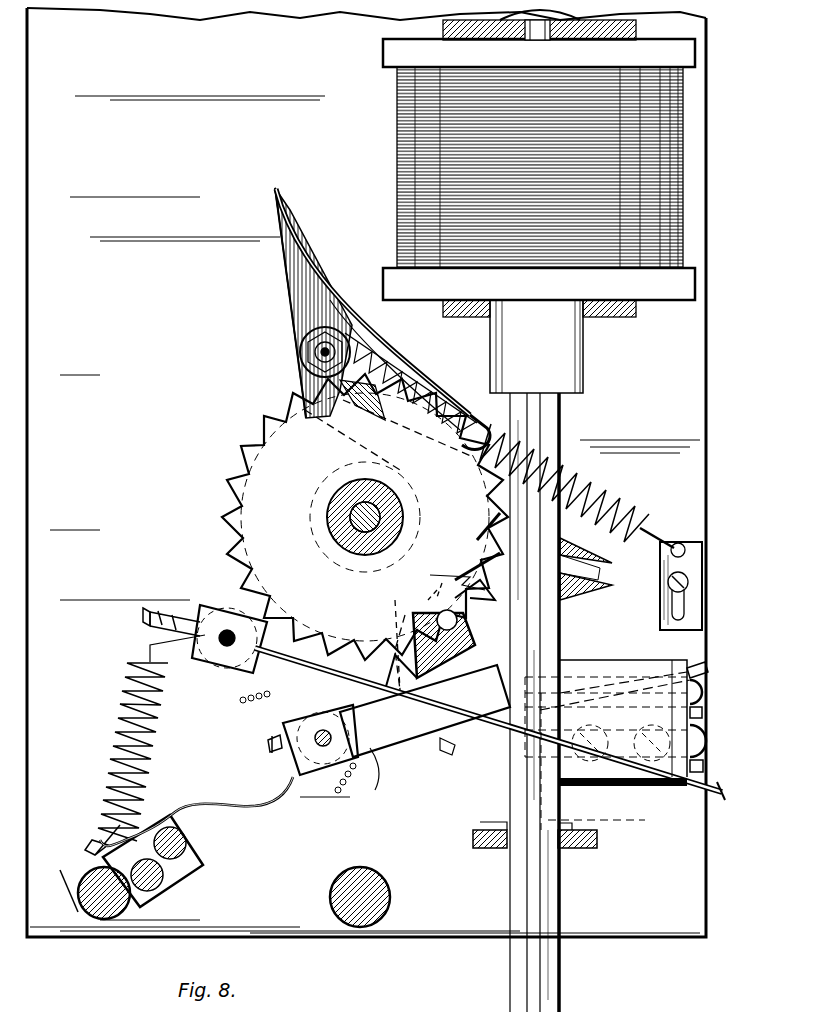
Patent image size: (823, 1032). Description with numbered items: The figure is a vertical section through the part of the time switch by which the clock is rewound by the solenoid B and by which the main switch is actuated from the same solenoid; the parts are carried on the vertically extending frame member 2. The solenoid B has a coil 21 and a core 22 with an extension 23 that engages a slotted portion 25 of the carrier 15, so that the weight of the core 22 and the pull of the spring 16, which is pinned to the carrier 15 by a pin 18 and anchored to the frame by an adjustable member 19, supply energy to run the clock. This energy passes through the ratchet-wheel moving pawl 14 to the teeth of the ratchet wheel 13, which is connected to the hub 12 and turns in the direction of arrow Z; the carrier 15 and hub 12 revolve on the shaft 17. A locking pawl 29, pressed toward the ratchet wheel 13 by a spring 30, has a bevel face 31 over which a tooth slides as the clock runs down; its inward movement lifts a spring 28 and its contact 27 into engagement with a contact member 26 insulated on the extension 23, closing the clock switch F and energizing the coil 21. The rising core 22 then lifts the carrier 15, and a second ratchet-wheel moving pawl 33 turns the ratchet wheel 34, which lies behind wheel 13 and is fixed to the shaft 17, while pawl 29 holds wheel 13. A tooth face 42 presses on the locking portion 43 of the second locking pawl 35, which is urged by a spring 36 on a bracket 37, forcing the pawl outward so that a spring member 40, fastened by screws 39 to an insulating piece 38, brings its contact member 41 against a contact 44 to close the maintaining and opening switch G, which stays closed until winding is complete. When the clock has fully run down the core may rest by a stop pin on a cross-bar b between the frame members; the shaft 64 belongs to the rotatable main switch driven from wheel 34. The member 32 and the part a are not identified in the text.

The frame member 2 is at (725, 882).
The solenoid B is at (548, 163).
The coil 21 is at (690, 190).
The core 22 is at (565, 400).
The extension 23 is at (560, 605).
The carrier 15 is at (295, 302).
The ratchet-wheel moving pawl 14 is at (440, 400).
The second ratchet-wheel moving pawl 33 is at (468, 546).
The pin 18 is at (320, 352).
The hub 12 is at (334, 517).
The ratchet wheel 13 is at (248, 548).
The ratchet wheel 34 is at (250, 458).
The shaft 17 is at (387, 500).
The face 42 is at (470, 576).
The locking portion 43 is at (480, 594).
The second locking pawl 35 is at (462, 636).
The bevel face 31 is at (435, 660).
The link 32 is at (378, 615).
The spring 16 is at (585, 483).
The slotted portion 25 is at (612, 576).
The adjustable member 19 is at (705, 590).
The locking pawl 29 is at (282, 703).
The contact 27 is at (712, 790).
The piece of insulating material 38 is at (425, 711).
The spring 28 is at (450, 745).
The screws 39 is at (430, 770).
The spring 30 is at (160, 733).
The bracket 37 is at (190, 830).
The spring 36 is at (295, 800).
The contact member 26 is at (683, 722).
The spring member 40 is at (640, 680).
The contact member 41 is at (708, 672).
The contact 44 is at (705, 706).
The circuit maintaining and opening switch G is at (708, 665).
The clock switch F is at (708, 768).
The fitting a is at (575, 825).
The cross-bar b is at (597, 840).
The shaft 64 is at (393, 897).